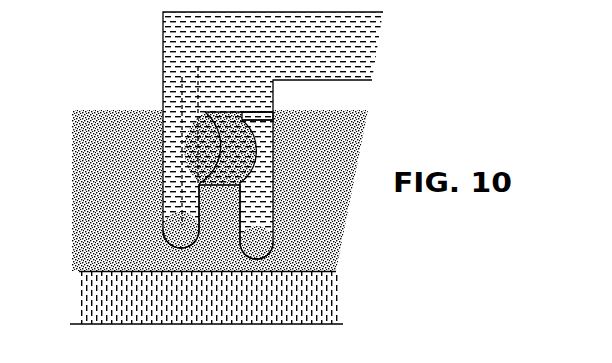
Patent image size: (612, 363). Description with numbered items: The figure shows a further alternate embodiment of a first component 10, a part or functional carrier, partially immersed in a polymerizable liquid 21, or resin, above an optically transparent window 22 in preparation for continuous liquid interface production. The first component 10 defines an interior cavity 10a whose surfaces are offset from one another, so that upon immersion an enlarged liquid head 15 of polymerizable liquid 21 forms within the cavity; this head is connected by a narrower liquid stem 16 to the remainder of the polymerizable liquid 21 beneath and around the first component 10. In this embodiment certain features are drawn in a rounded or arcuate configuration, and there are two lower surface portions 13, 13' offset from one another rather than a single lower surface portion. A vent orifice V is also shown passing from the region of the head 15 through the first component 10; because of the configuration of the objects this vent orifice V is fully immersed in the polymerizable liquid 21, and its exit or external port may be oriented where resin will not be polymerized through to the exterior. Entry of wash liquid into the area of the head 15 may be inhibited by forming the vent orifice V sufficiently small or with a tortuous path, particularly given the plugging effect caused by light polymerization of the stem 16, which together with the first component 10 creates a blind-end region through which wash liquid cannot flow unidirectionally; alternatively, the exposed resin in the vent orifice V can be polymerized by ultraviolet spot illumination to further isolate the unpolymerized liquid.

The first component 10 is at (273, 135).
The interior cavity 10a is at (192, 212).
The polymerizable liquid 21 is at (220, 190).
The optically transparent window 22 is at (206, 298).
The enlarged liquid head 15 is at (228, 148).
The liquid stem 16 is at (219, 214).
The lower surface portion 13 is at (316, 260).
The lower surface portion 13' is at (116, 233).
The vent orifice V is at (273, 114).